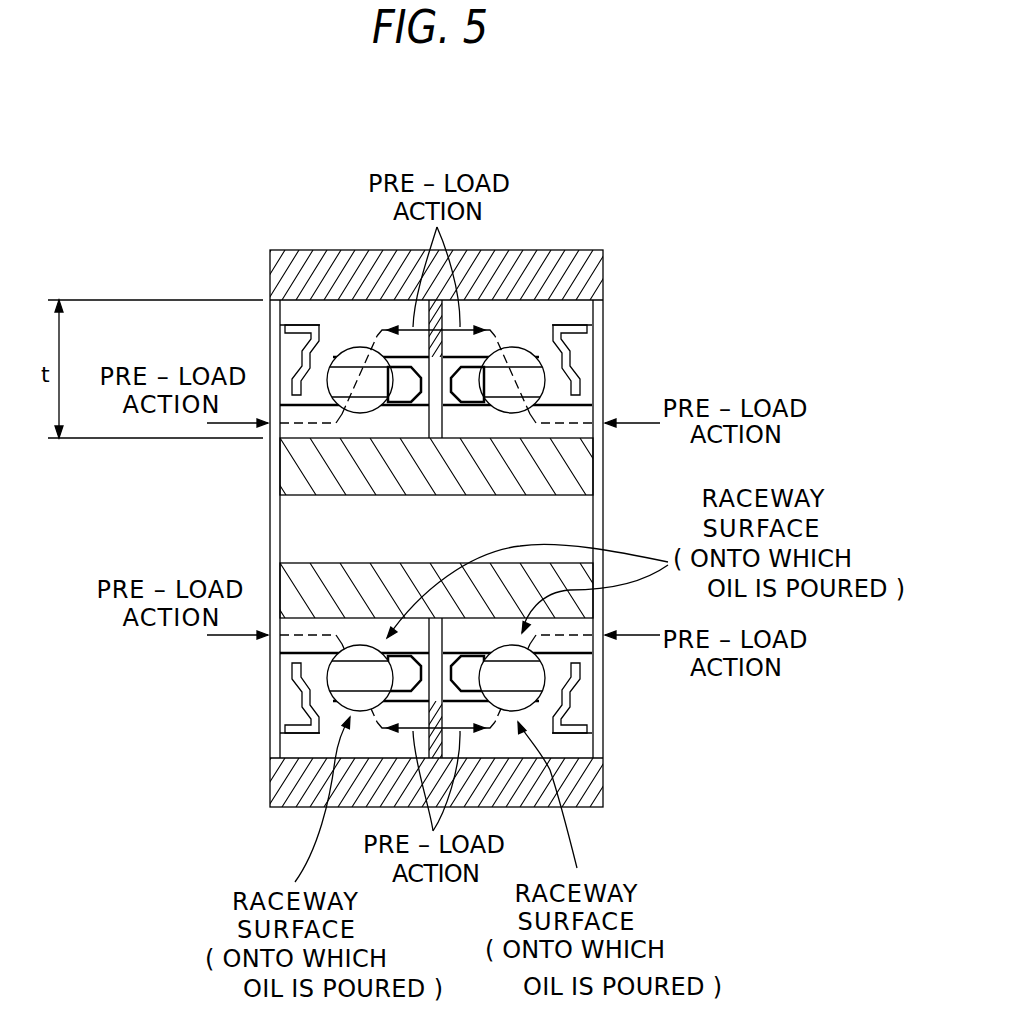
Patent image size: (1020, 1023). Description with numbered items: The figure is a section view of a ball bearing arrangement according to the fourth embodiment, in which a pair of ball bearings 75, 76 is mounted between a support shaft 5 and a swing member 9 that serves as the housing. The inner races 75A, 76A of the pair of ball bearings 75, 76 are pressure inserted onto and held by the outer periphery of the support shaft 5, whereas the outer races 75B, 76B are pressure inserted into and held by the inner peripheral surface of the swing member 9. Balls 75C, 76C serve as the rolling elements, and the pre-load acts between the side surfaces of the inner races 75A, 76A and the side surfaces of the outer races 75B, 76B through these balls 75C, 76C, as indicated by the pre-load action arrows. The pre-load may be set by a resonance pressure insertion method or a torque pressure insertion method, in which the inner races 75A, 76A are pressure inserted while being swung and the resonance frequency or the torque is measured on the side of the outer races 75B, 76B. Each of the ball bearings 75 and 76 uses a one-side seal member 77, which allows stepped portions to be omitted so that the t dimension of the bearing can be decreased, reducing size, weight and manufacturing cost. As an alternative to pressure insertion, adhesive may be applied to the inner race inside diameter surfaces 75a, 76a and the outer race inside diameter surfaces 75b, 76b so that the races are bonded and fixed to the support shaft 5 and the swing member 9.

The swing member (housing) 9 is at (580, 275).
The support shaft 5 is at (572, 468).
The ball bearing 75 is at (613, 340).
The ball bearing 76 is at (265, 718).
The one-side seal member 77 is at (592, 378).
The inner race inside diameter surface 75a is at (553, 495).
The inner race inside diameter surface 76a is at (320, 495).
The outer race inside diameter surface 75b is at (542, 303).
The outer race inside diameter surface 76b is at (332, 303).
The inner race 75A is at (578, 647).
The inner race 76A is at (288, 648).
The outer race 75B is at (565, 745).
The outer race 76B is at (323, 740).
The ball 75C is at (527, 692).
The ball 76C is at (340, 692).